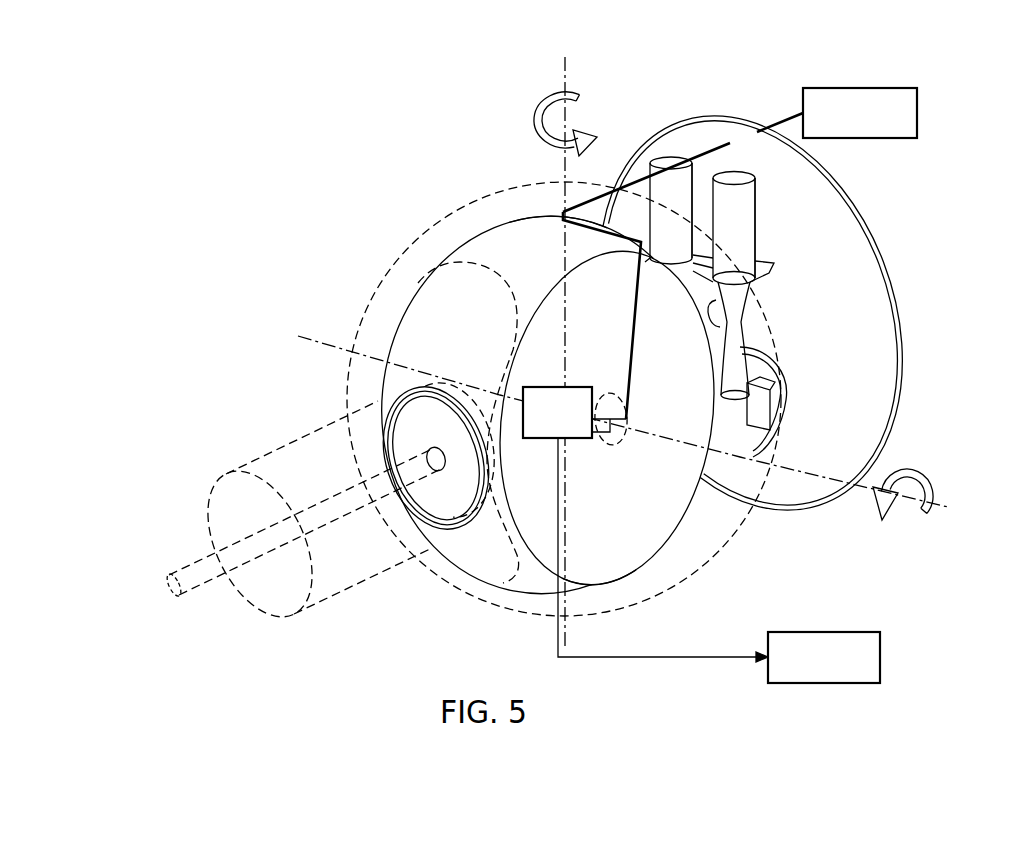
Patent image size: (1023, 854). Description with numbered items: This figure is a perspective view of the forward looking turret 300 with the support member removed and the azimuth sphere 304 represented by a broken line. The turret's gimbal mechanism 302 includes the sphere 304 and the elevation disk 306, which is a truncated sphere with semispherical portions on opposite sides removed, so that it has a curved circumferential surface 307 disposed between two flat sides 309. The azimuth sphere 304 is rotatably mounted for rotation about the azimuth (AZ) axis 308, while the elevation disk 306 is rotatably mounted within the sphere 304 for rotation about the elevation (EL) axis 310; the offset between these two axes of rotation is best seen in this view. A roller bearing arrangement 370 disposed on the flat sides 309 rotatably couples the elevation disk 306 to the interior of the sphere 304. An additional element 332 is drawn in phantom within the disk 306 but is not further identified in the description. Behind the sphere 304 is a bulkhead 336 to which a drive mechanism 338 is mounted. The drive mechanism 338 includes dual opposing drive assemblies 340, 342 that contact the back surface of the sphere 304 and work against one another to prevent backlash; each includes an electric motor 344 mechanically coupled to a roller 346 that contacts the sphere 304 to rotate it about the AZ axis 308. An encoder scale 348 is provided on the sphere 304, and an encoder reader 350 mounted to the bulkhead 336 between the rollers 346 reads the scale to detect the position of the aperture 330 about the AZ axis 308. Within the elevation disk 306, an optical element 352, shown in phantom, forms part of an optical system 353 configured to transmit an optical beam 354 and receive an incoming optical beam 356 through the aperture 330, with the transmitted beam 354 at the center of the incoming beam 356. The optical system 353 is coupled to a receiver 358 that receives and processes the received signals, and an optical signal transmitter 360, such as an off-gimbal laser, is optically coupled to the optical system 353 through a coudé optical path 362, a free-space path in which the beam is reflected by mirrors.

The forward looking turret 300 is at (327, 160).
The gimbal mechanism 302 is at (655, 513).
The azimuth sphere 304 is at (478, 203).
The elevation disk 306 is at (412, 303).
The curved circumferential surface 307 is at (437, 290).
The azimuth (AZ) axis 308 is at (563, 77).
The flat sides 309 is at (640, 562).
The elevation (EL) axis 310 is at (863, 490).
The aperture 330 is at (440, 523).
The motor 332 is at (503, 298).
The bulkhead 336 is at (868, 223).
The drive mechanism 338 is at (782, 273).
The drive assembly 340 is at (756, 240).
The drive assembly 342 is at (694, 177).
The electric motor 344 is at (652, 158).
The roller 346 is at (737, 368).
The encoder scale 348 is at (775, 437).
The encoder reader 350 is at (718, 320).
The optical element 352 is at (450, 383).
The optical system 353 is at (572, 438).
The transmitted optical beam 354 is at (183, 592).
The incoming optical beam 356 is at (297, 453).
The receiver 358 is at (823, 632).
The optical signal transmitter 360 is at (917, 108).
The coudé optical path 362 is at (710, 150).
The roller bearing arrangement 370 is at (620, 440).